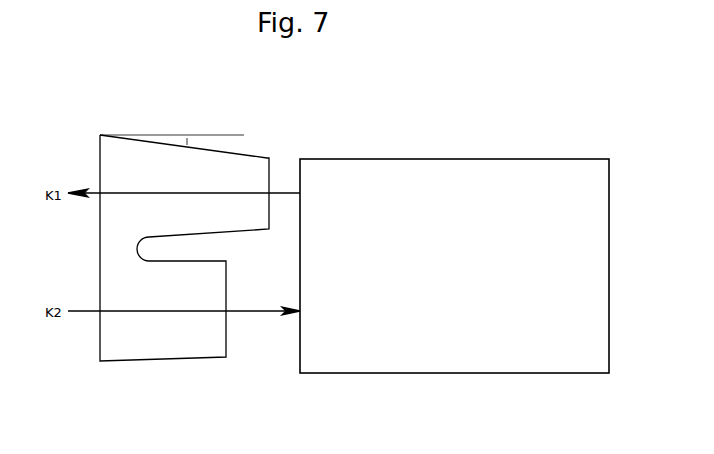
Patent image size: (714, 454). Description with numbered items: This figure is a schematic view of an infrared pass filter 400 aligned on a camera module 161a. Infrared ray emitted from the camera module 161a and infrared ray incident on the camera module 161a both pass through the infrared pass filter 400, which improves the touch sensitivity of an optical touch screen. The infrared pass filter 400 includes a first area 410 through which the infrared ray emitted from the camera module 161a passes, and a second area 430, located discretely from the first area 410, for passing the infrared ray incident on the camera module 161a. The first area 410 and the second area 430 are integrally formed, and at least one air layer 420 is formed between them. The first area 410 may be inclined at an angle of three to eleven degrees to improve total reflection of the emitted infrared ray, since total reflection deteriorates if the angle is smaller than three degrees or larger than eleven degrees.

The infrared pass filter 400 is at (169, 234).
The first area 410 is at (257, 168).
The air layer 420 is at (167, 248).
The second area 430 is at (202, 343).
The camera module 161a is at (540, 158).